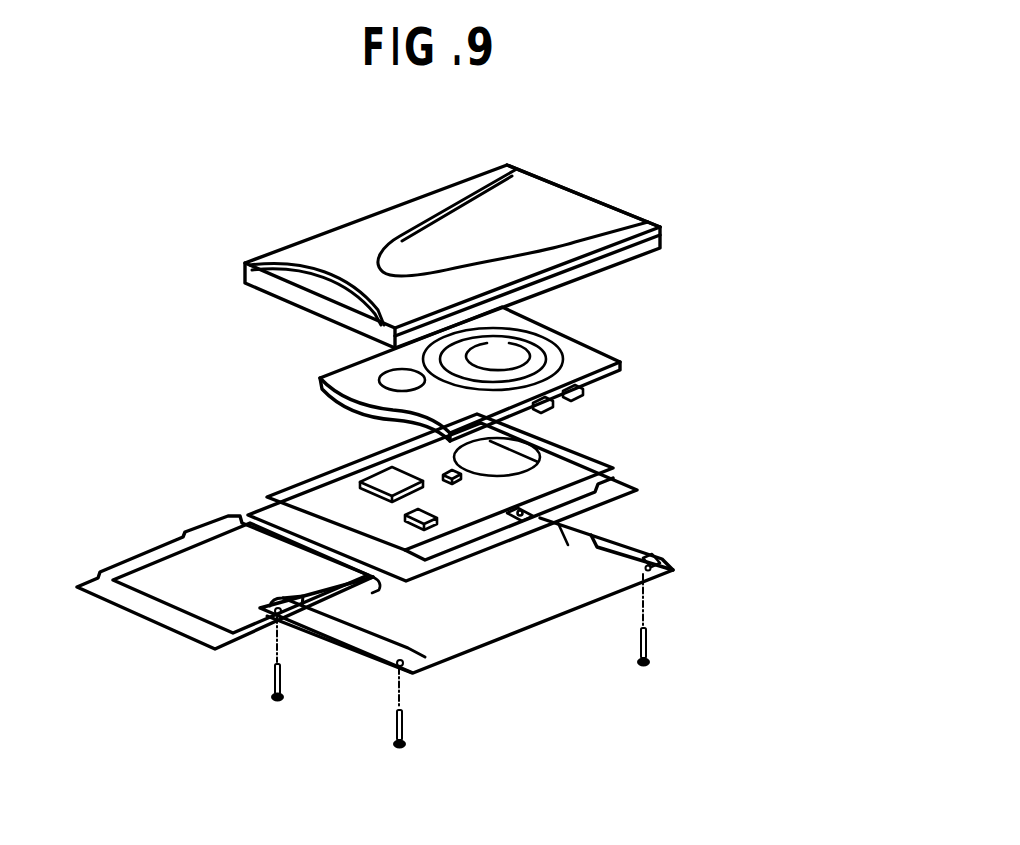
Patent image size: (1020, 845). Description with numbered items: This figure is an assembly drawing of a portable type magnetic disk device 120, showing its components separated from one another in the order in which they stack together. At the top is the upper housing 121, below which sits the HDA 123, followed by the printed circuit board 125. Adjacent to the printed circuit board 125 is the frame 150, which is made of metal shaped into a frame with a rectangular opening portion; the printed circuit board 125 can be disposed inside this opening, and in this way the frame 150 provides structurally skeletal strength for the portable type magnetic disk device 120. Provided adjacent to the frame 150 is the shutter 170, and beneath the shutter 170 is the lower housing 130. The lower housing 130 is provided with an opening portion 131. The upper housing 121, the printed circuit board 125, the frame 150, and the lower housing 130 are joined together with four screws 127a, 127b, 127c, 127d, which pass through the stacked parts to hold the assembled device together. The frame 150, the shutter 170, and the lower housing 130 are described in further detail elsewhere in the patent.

The portable type magnetic disk device 120 is at (597, 178).
The upper housing 121 is at (557, 225).
The HDA 123 is at (598, 345).
The printed circuit board 125 is at (580, 443).
The frame 150 is at (623, 480).
The lower housing 130 is at (557, 583).
The opening portion 131 is at (403, 648).
The shutter 170 is at (183, 622).
The screw 127a is at (277, 654).
The screw 127b is at (399, 704).
The screw 127c is at (643, 620).
The screw 127d is at (648, 568).